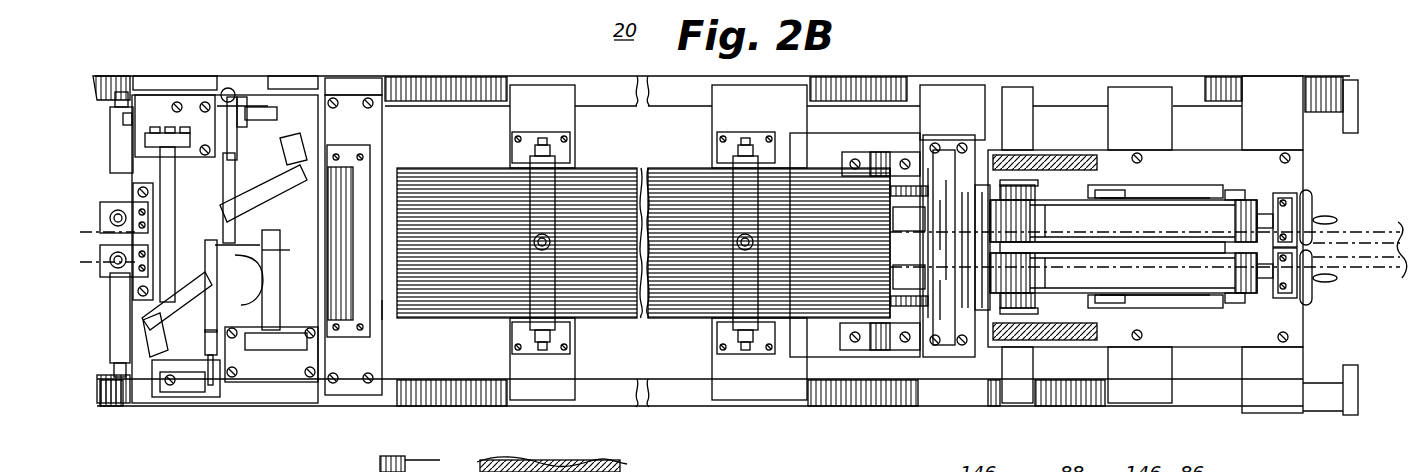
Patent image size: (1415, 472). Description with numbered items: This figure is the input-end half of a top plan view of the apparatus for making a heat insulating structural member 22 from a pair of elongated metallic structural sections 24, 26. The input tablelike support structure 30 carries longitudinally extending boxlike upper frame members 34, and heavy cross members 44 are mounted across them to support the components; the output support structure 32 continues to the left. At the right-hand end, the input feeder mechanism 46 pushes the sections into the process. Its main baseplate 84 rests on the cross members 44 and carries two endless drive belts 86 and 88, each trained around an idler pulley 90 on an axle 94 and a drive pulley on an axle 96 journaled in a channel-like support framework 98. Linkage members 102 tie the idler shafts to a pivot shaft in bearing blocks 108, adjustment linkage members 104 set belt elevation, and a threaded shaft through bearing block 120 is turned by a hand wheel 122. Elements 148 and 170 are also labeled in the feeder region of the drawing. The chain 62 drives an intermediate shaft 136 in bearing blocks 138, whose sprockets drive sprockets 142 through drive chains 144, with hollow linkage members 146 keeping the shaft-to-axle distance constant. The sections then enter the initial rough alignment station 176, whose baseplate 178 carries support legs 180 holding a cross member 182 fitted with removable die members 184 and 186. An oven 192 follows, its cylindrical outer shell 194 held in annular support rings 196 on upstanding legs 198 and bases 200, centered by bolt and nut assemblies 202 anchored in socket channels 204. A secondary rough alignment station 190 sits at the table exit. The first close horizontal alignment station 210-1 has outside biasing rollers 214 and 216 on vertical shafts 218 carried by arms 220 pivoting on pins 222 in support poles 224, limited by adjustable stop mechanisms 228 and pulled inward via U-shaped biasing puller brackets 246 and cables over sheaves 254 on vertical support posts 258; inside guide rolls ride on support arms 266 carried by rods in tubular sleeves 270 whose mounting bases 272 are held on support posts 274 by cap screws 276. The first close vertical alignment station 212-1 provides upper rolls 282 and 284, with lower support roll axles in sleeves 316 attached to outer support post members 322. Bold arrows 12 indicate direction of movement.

The structural member 22 is at (1360, 274).
The elongated metallic structural section 24 is at (1370, 278).
The elongated metallic structural section 26 is at (1393, 214).
The tablelike support structure 30 is at (921, 429).
The tablelike support structure 32 is at (236, 451).
The upper frame member 34 is at (452, 80).
The cross member 44 is at (170, 83).
The input feeder mechanism 46 is at (1333, 69).
The chain 62 is at (889, 371).
The main baseplate 84 is at (1278, 154).
The endless drive belt 86 is at (1130, 288).
The endless drive belt 88 is at (1130, 230).
The idler pulley 90 is at (1276, 210).
The axle 94 is at (1244, 191).
The axle 96 is at (1028, 183).
The channel-like support framework 98 is at (1178, 196).
The linkage member 102 is at (1180, 187).
The adjustment linkage member 104 is at (1121, 190).
The bearing block 108 is at (1106, 186).
The bearing block 120 is at (1296, 198).
The hand wheel 122 is at (1312, 217).
The intermediate shaft 136 is at (884, 152).
The bearing block 138 is at (870, 160).
The sprocket 142 is at (1024, 184).
The drive chain 144 is at (1063, 246).
The hollow linkage member 146 is at (910, 243).
The hatched block 148 is at (1068, 155).
The block 170 is at (978, 180).
The initial rough alignment station 176 is at (943, 97).
The baseplate 178 is at (376, 126).
The support leg 180 is at (343, 162).
The cross member 182 is at (364, 332).
The die member 184 is at (385, 311).
The die member 186 is at (358, 188).
The secondary rough alignment station 190 is at (354, 92).
The oven 192 is at (648, 336).
The cylindrical outer shell 194 is at (639, 180).
The annular support ring 196 is at (552, 162).
The upstanding leg 198 is at (545, 132).
The base 200 is at (526, 132).
The centering bolt and nut assembly 202 is at (546, 146).
The socket channel 204 is at (489, 168).
The close horizontal alignment station 210-1 is at (267, 31).
The close vertical alignment station 212-1 is at (89, 33).
The outside biasing roller 214 is at (266, 268).
The outside biasing roller 216 is at (216, 179).
The vertical shaft 218 is at (548, 464).
The arm 220 is at (278, 180).
The pivot pin 222 is at (167, 376).
The support pole 224 is at (302, 144).
The adjustable stop mechanism 228 is at (137, 394).
The U-shaped biasing puller bracket 246 is at (236, 268).
The sheave 254 is at (230, 90).
The vertical support post 258 is at (240, 97).
The support arm 266 is at (258, 216).
The tubular sleeve 270 is at (160, 154).
The mounting base 272 is at (145, 134).
The support post 274 is at (288, 386).
The cap screw 276 is at (150, 124).
The upper roll 282 is at (102, 266).
The upper roll 284 is at (102, 214).
The sleeve 316 is at (132, 128).
The outer support post member 322 is at (156, 107).
The direction arrow 12 is at (226, 165).